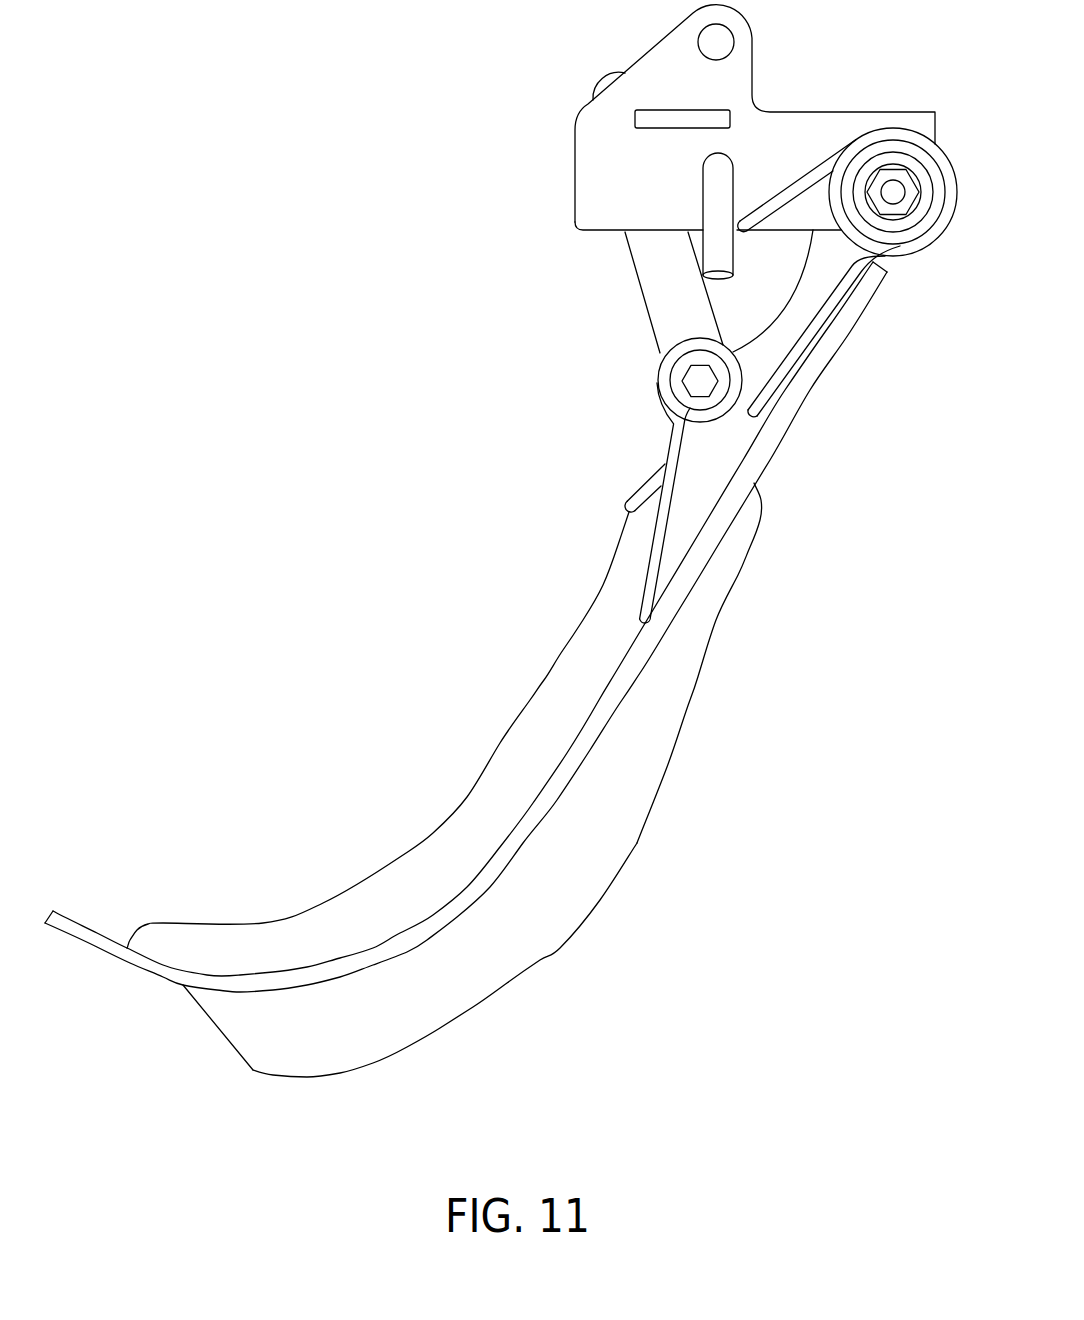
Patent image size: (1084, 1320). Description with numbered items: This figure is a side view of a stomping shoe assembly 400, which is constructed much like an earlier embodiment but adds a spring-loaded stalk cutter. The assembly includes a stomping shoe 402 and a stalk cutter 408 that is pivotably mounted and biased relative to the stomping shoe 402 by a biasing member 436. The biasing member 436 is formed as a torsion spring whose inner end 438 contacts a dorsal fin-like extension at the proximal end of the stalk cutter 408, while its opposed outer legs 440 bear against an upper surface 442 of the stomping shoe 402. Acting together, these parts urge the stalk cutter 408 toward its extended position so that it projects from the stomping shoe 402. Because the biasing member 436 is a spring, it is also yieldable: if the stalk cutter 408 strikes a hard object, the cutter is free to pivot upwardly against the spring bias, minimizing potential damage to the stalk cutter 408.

The stomping shoe assembly 400 is at (372, 430).
The stomping shoe 402 is at (500, 748).
The stalk cutter 408 is at (563, 945).
The biasing member 436 is at (657, 378).
The inner end 438 is at (627, 499).
The outer legs 440 is at (663, 537).
The upper surface 442 is at (620, 670).